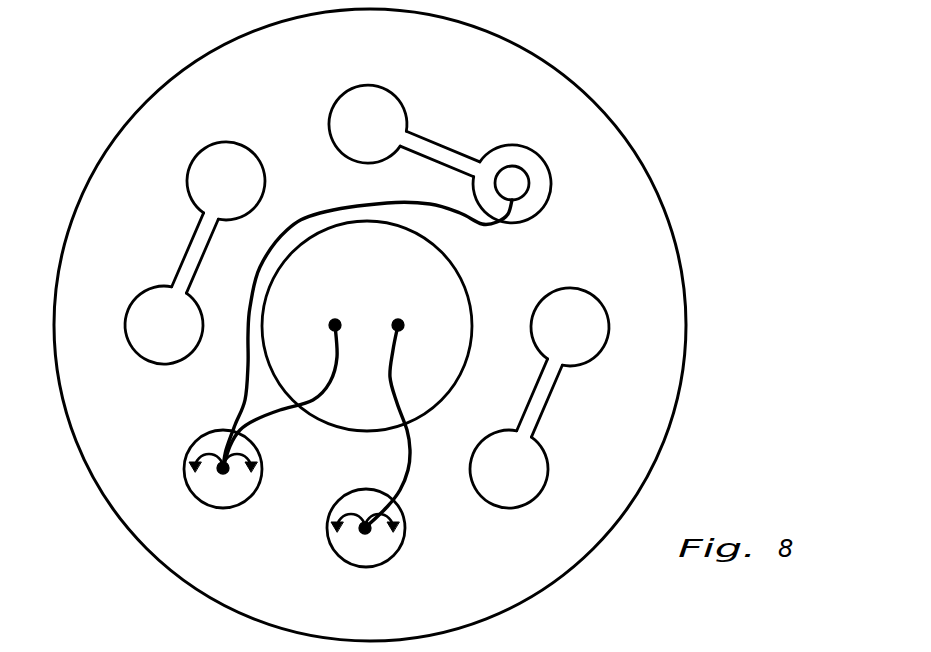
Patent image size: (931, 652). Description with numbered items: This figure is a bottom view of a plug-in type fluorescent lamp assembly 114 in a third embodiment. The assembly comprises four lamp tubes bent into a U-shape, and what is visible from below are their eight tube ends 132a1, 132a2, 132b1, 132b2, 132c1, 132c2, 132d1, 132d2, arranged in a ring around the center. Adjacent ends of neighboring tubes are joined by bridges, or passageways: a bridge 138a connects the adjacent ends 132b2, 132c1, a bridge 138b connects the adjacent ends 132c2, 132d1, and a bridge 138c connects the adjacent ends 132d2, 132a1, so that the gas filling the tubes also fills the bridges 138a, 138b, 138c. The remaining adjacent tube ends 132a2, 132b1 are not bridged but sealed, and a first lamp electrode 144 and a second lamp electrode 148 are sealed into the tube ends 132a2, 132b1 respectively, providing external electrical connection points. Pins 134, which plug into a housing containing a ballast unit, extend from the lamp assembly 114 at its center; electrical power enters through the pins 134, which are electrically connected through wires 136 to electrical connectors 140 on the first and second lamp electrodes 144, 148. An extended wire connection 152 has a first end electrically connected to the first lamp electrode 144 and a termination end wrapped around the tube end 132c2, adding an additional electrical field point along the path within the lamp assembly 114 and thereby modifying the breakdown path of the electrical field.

The plug-in type lamp assembly 114 is at (119, 127).
The tube end 132a1 is at (138, 362).
The tube end 132a2 is at (232, 508).
The tube end 132b1 is at (394, 554).
The tube end 132b2 is at (501, 508).
The tube end 132c1 is at (570, 288).
The tube end 132c2 is at (556, 203).
The tube end 132d1 is at (377, 85).
The tube end 132d2 is at (224, 142).
The pins 134 is at (341, 325).
The wires 136 is at (392, 378).
The bridge 138a is at (548, 407).
The bridge 138b is at (446, 147).
The bridge 138c is at (186, 252).
The electrical connectors 140 is at (198, 462).
The first lamp electrode 144 is at (220, 472).
The second lamp electrode 148 is at (363, 532).
The extended wire connection 152 is at (527, 179).